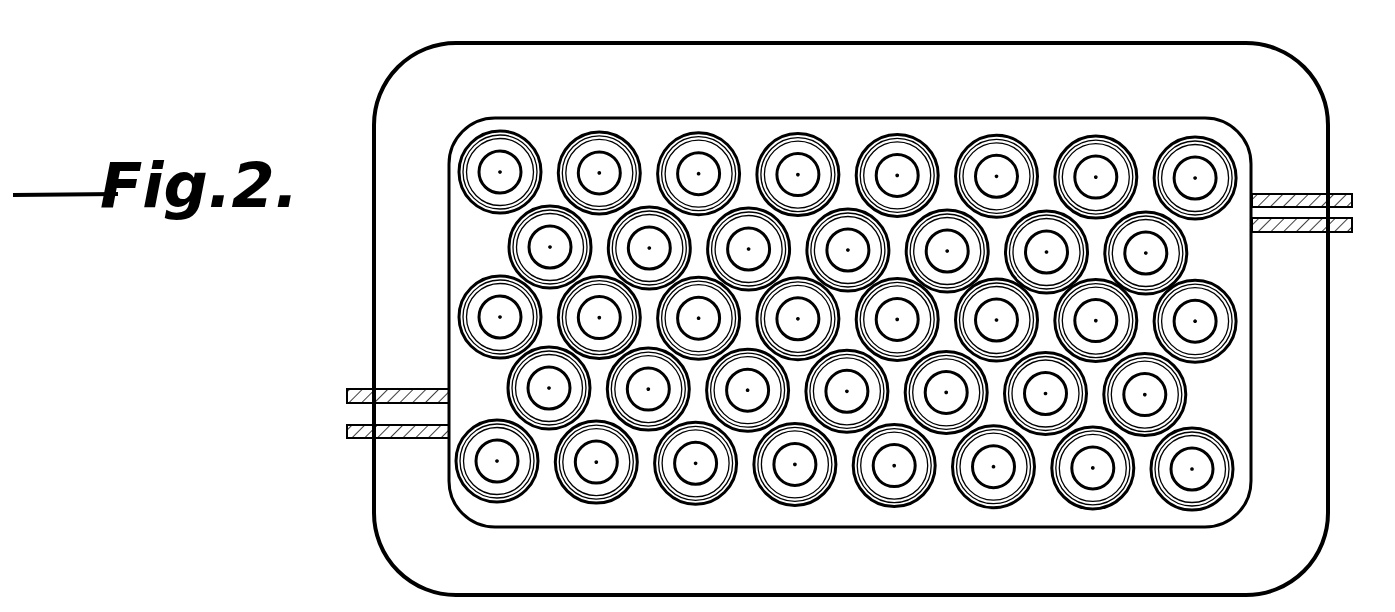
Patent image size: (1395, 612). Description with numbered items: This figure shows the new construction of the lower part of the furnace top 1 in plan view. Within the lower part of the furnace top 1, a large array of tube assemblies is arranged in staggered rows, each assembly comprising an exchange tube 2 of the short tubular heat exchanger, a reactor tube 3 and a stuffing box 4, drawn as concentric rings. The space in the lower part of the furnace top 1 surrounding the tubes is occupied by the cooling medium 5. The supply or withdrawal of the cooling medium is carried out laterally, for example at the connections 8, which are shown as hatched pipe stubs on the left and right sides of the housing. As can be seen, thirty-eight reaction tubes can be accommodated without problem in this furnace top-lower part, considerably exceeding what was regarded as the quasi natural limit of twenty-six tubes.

The lower part of the furnace top 1 is at (1320, 450).
The exchange tube 2 is at (1218, 433).
The reactor tube 3 is at (1200, 470).
The stuffing box 4 is at (1207, 488).
The cooling medium 5 is at (1235, 269).
The supply or withdrawal of the cooling medium 8 is at (352, 410).